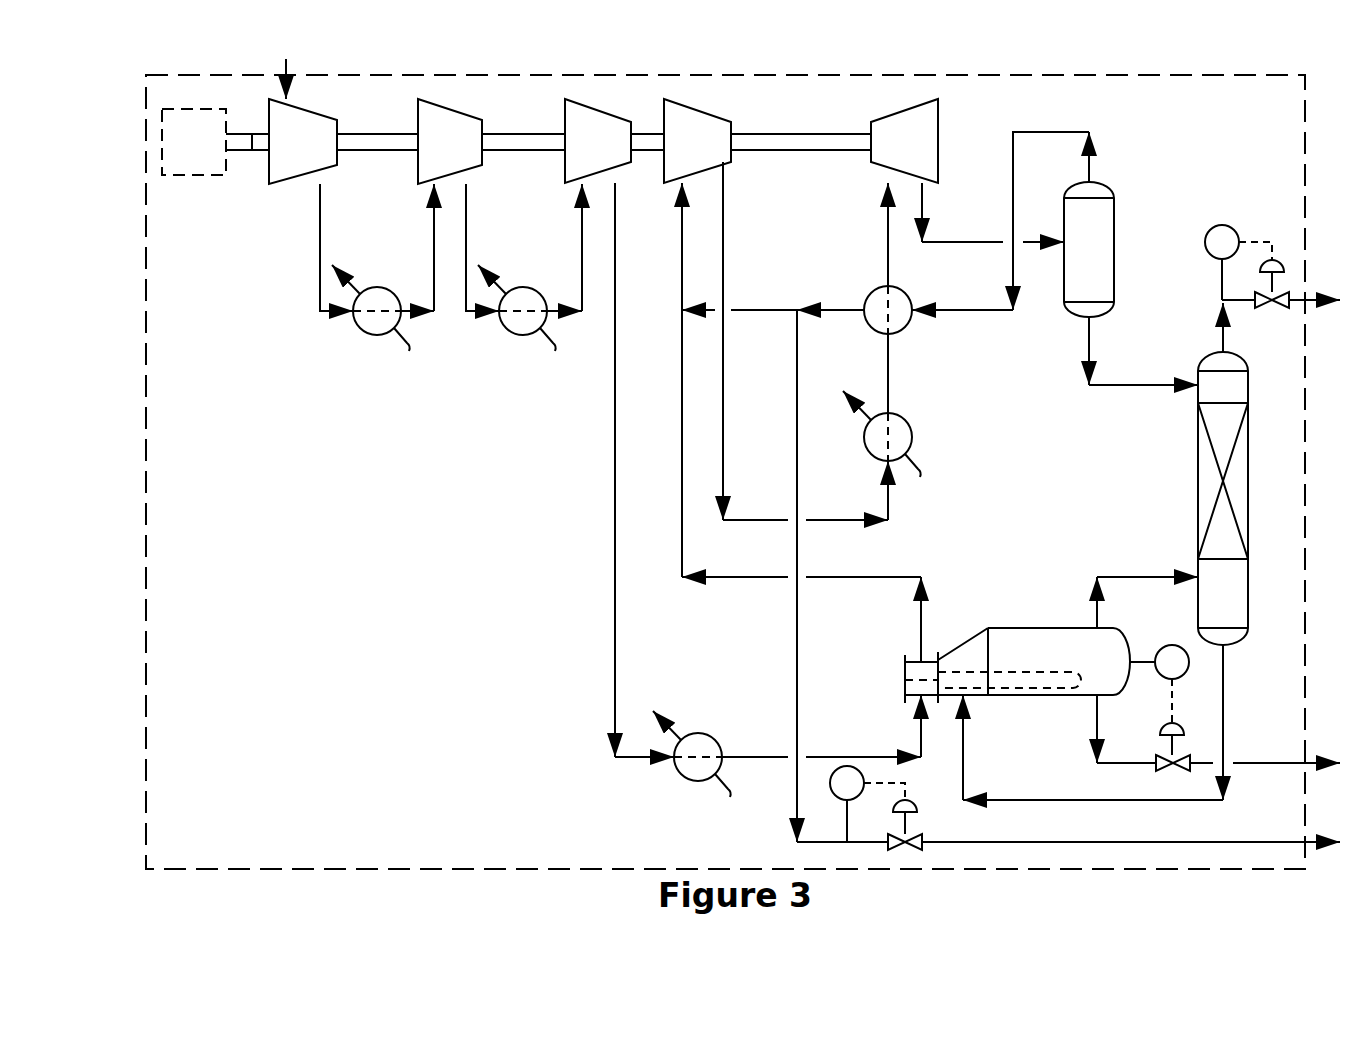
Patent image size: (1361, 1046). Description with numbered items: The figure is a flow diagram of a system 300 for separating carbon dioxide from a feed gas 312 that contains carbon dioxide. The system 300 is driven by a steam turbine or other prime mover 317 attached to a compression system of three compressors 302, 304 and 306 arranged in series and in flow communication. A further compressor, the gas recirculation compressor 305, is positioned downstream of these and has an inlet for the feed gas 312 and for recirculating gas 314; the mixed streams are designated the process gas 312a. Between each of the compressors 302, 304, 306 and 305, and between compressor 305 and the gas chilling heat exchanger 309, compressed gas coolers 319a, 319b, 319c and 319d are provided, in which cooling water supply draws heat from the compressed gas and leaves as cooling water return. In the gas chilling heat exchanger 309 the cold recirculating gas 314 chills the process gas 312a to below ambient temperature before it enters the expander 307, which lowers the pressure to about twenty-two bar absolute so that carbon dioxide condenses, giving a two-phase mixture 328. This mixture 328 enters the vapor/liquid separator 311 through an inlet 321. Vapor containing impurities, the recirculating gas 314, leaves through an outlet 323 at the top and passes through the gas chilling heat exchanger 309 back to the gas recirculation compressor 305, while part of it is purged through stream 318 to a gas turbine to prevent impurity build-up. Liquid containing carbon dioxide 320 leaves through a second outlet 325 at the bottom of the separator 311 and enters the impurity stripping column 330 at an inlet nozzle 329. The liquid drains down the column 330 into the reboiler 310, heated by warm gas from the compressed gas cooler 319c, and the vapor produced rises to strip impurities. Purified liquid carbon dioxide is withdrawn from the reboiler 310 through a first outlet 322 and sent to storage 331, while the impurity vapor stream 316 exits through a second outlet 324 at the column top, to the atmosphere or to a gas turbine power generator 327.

The system 300 is at (370, 869).
The compressor 302 is at (303, 141).
The compressor 304 is at (450, 141).
The gas recirculation compressor 305 is at (697, 141).
The compressor 306 is at (598, 141).
The expander 307 is at (904, 141).
The gas chilling heat exchanger 309 is at (870, 290).
The reboiler 310 is at (1051, 667).
The vapor/liquid separator 311 is at (1114, 247).
The feed gas 312 is at (285, 66).
The process gas 312a is at (684, 212).
The recirculating gas 314 is at (1050, 132).
The vapor stream 316 is at (1297, 305).
The prime mover 317 is at (215, 142).
The purge stream 318 is at (797, 645).
The compressed gas cooler 319a is at (370, 337).
The compressed gas cooler 319b is at (516, 337).
The compressed gas cooler 319c is at (690, 781).
The compressed gas cooler 319d is at (905, 418).
The liquid containing carbon dioxide 320 is at (1113, 390).
The inlet 321 is at (1062, 250).
The first outlet 322 is at (1097, 698).
The outlet 323 is at (1093, 182).
The second outlet 324 is at (1222, 350).
The second outlet 325 is at (1092, 327).
The gas turbine power generator 327 is at (1134, 825).
The two-phase mixture 328 is at (985, 243).
The inlet nozzle 329 is at (1196, 395).
The impurity stripping column 330 is at (1198, 480).
The storage 331 is at (1268, 748).